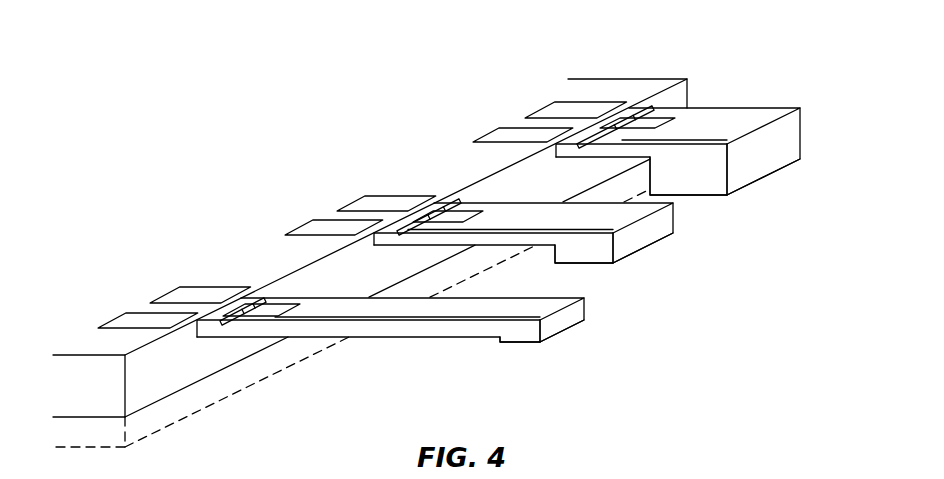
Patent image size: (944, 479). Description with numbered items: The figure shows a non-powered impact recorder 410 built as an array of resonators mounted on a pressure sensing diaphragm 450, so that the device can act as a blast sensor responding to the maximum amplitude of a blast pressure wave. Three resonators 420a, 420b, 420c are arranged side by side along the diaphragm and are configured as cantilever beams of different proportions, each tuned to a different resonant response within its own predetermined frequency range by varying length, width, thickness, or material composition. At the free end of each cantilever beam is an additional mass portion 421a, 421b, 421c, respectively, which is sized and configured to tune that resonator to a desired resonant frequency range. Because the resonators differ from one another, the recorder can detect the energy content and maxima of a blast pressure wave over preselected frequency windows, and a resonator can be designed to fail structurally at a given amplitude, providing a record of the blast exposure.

The non-powered impact recorder 410 is at (700, 31).
The resonator 420a is at (402, 330).
The resonator 420b is at (502, 238).
The resonator 420c is at (707, 115).
The additional mass portion 421a is at (522, 342).
The additional mass portion 421b is at (606, 257).
The additional mass portion 421c is at (707, 188).
The pressure sensing diaphragm 450 is at (222, 387).